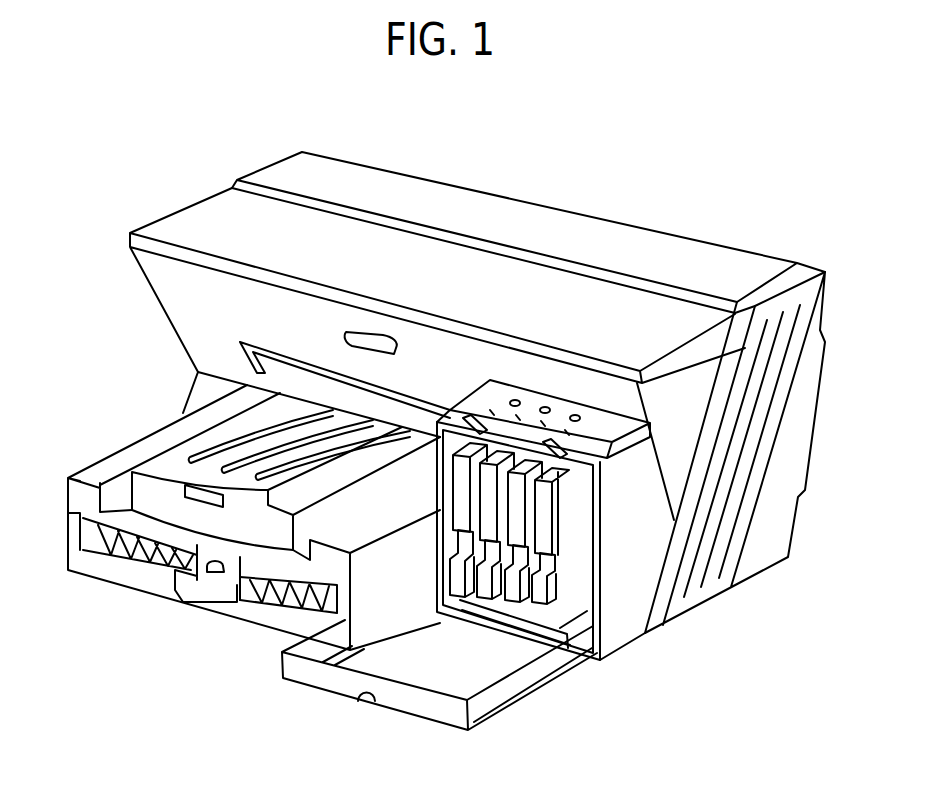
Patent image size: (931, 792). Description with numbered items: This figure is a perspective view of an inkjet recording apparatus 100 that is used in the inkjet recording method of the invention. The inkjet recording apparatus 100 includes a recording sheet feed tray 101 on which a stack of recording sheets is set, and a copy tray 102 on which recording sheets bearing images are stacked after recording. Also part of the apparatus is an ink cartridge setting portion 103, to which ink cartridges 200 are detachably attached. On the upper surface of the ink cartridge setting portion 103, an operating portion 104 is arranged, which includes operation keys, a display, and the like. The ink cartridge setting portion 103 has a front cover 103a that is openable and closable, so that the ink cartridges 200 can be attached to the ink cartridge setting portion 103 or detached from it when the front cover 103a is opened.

The inkjet recording apparatus 100 is at (548, 163).
The recording sheet feed tray 101 is at (247, 607).
The copy tray 102 is at (132, 480).
The ink cartridge setting portion 103 is at (617, 625).
The front cover 103a is at (292, 670).
The operating portion 104 is at (593, 428).
The ink cartridges 200 is at (517, 600).